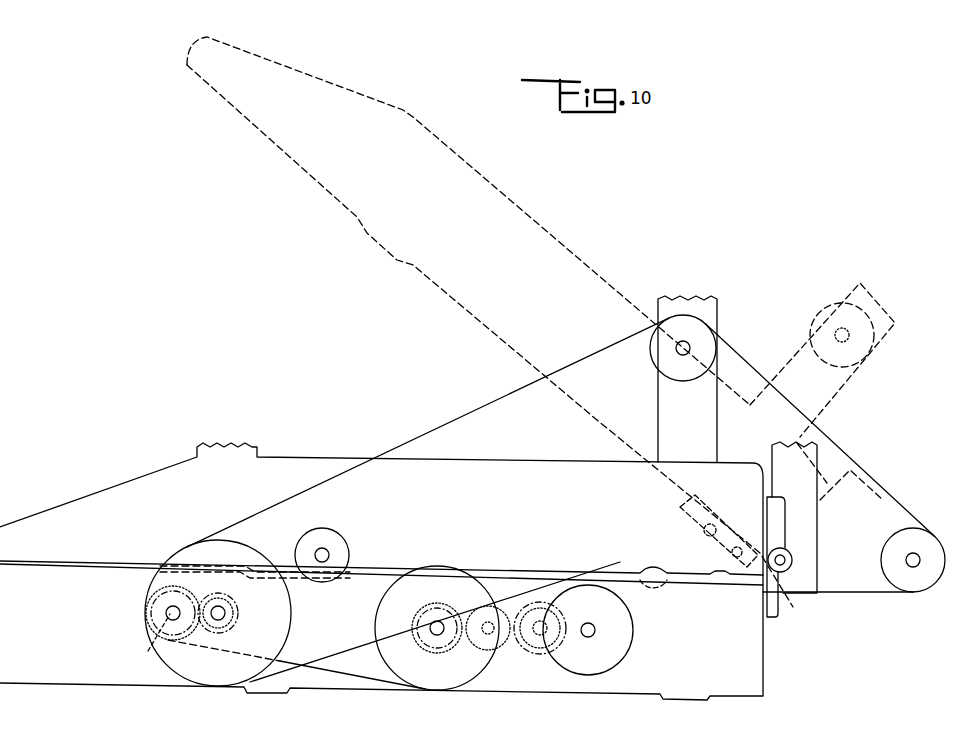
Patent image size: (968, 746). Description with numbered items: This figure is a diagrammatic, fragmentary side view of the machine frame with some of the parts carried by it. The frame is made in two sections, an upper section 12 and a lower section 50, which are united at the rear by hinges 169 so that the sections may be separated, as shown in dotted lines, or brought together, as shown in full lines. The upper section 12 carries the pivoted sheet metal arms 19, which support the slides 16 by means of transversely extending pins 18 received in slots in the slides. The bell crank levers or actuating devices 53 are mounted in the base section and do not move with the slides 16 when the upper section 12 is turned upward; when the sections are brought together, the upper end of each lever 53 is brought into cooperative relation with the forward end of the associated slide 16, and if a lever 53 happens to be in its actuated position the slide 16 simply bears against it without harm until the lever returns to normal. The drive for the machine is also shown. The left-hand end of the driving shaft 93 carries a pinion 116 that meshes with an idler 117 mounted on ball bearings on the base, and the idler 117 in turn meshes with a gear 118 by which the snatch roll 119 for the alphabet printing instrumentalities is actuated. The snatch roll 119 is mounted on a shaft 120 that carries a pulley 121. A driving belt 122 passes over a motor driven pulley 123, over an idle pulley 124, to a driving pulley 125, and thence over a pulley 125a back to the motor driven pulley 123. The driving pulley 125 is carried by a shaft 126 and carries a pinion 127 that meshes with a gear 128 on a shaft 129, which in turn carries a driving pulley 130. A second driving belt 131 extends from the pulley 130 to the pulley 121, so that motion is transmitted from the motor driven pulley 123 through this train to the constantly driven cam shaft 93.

The upper frame section 12 is at (541, 322).
The slide 16 is at (704, 510).
The supporting pin 18 is at (732, 552).
The sheet metal arm 19 is at (714, 516).
The lower frame section 50 is at (381, 571).
The bell crank lever 53 is at (655, 571).
The driving shaft 93 is at (541, 640).
The pinion 116 is at (525, 648).
The idler 117 is at (482, 648).
The gear 118 is at (432, 607).
The snatch roll 119 is at (414, 624).
The shaft 120 is at (437, 636).
The pulley 121 is at (383, 609).
The driving belt 122 is at (471, 412).
The motor driven pulley 123 is at (913, 560).
The idle pulley 124 is at (588, 630).
The driving pulley 125 is at (286, 612).
The pulley 125a is at (762, 379).
The shaft 126 is at (225, 610).
The pinion 127 is at (236, 612).
The gear 128 is at (148, 604).
The shaft 129 is at (149, 643).
The driving pulley 130 is at (147, 617).
The driving belt 131 is at (345, 585).
The hinge 169 is at (783, 569).